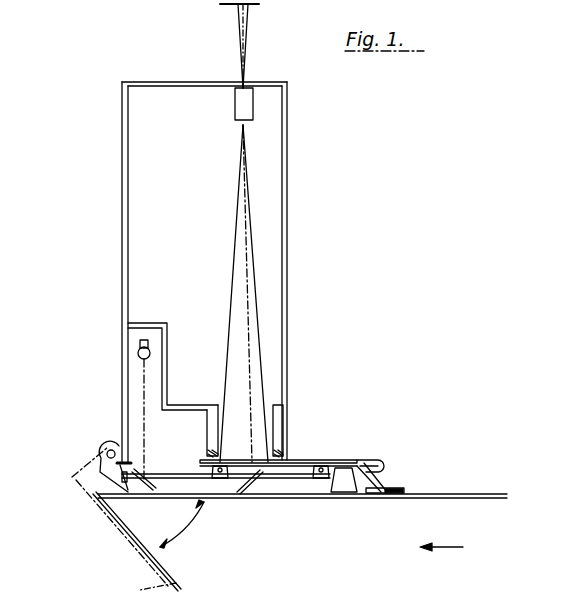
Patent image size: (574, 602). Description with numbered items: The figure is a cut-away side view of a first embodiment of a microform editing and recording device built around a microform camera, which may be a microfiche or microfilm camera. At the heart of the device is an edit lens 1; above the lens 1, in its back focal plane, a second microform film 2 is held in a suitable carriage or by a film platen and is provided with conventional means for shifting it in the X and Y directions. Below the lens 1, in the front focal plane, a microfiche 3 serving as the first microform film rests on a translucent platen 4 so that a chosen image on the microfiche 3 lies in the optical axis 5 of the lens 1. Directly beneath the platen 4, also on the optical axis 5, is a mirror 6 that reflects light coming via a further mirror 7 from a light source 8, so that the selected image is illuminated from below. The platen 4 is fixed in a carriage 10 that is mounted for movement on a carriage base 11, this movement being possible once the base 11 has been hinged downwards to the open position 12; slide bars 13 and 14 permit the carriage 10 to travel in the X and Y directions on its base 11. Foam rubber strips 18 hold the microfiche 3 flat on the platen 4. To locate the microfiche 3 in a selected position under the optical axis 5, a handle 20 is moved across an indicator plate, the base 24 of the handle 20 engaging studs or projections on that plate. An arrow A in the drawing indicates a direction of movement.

The edit lens 1 is at (235, 104).
The second microform film 2 is at (263, 6).
The microfiche 3 is at (335, 462).
The translucent platen 4 is at (361, 462).
The optical axis 5 is at (250, 263).
The mirror 6 is at (248, 512).
The further mirror 7 is at (118, 503).
The light source 8 is at (140, 350).
The carriage 10 is at (383, 464).
The carriage base 11 is at (297, 500).
The open position 12 is at (176, 583).
The slide bars 13 is at (217, 478).
The slide bars 14 is at (183, 479).
The foam rubber strips 18 is at (211, 452).
The handle 20 is at (388, 468).
The base of the handle 24 is at (391, 495).
The direction arrow A is at (451, 548).